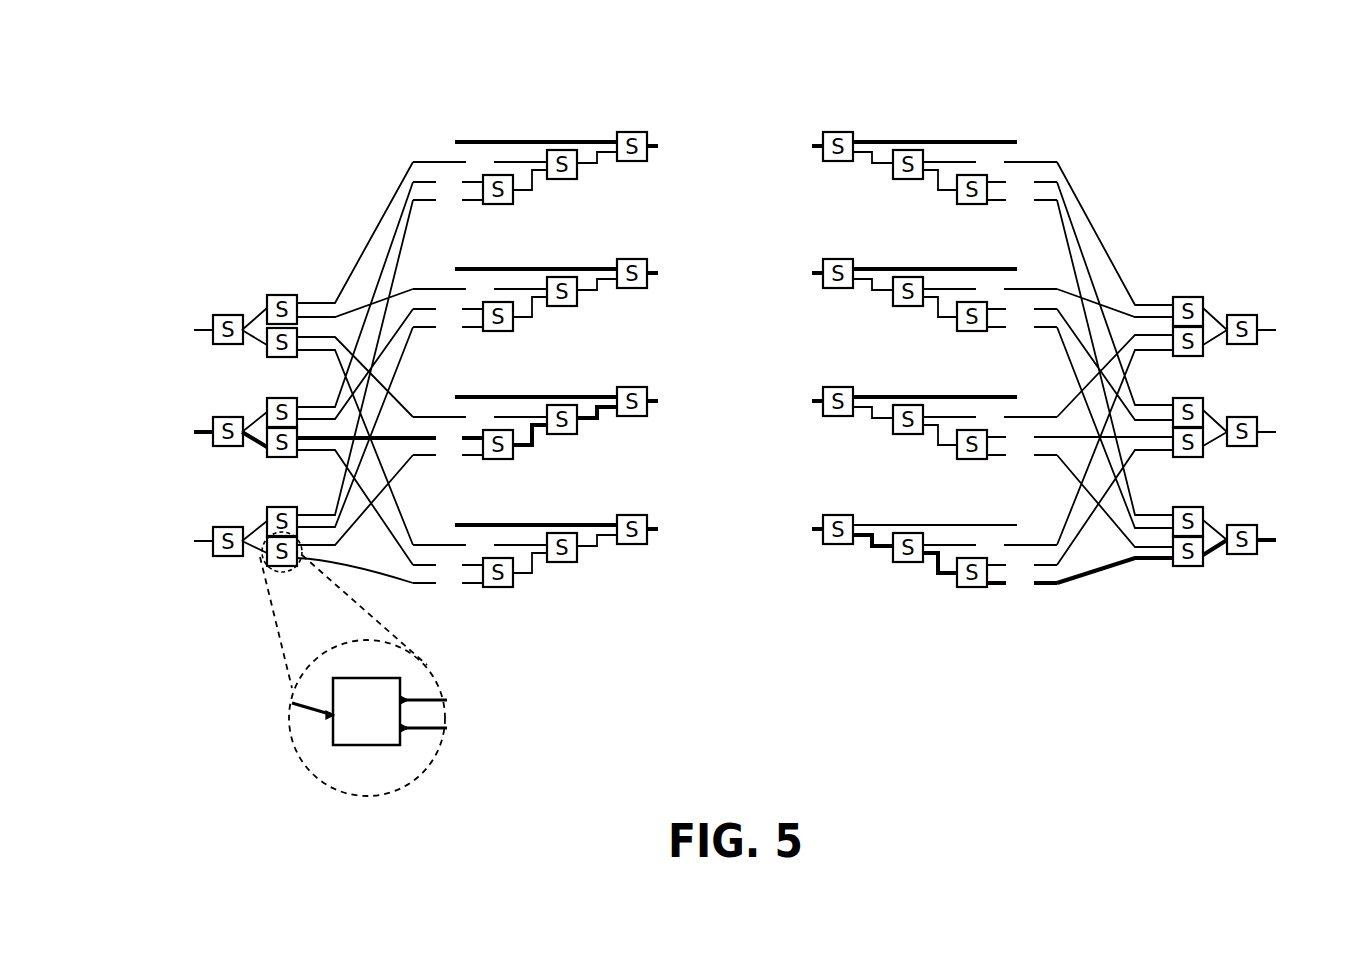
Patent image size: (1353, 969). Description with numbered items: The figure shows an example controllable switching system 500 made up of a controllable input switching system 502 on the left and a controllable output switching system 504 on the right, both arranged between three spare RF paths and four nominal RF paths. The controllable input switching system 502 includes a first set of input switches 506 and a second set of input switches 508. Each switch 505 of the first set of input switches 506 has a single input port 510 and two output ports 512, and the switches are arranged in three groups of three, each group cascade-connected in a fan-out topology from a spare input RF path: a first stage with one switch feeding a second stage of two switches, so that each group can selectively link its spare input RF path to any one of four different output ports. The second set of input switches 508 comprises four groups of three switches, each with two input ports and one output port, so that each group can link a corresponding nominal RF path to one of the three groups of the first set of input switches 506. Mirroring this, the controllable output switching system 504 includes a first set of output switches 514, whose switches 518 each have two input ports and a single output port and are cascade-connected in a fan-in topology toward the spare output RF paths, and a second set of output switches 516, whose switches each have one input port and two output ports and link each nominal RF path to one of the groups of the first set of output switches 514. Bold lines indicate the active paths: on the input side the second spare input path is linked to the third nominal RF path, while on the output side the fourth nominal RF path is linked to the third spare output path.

The controllable switching system 500 is at (225, 90).
The controllable input switching system 502 is at (368, 115).
The controllable output switching system 504 is at (1073, 115).
The switch 505 is at (368, 745).
The first set of input switches 506 is at (240, 285).
The second set of input switches 508 is at (540, 603).
The input port 510 is at (332, 717).
The output ports 512 is at (403, 693).
The first set of output switches 514 is at (1183, 270).
The second set of output switches 516 is at (915, 603).
The switch 518 is at (1192, 567).